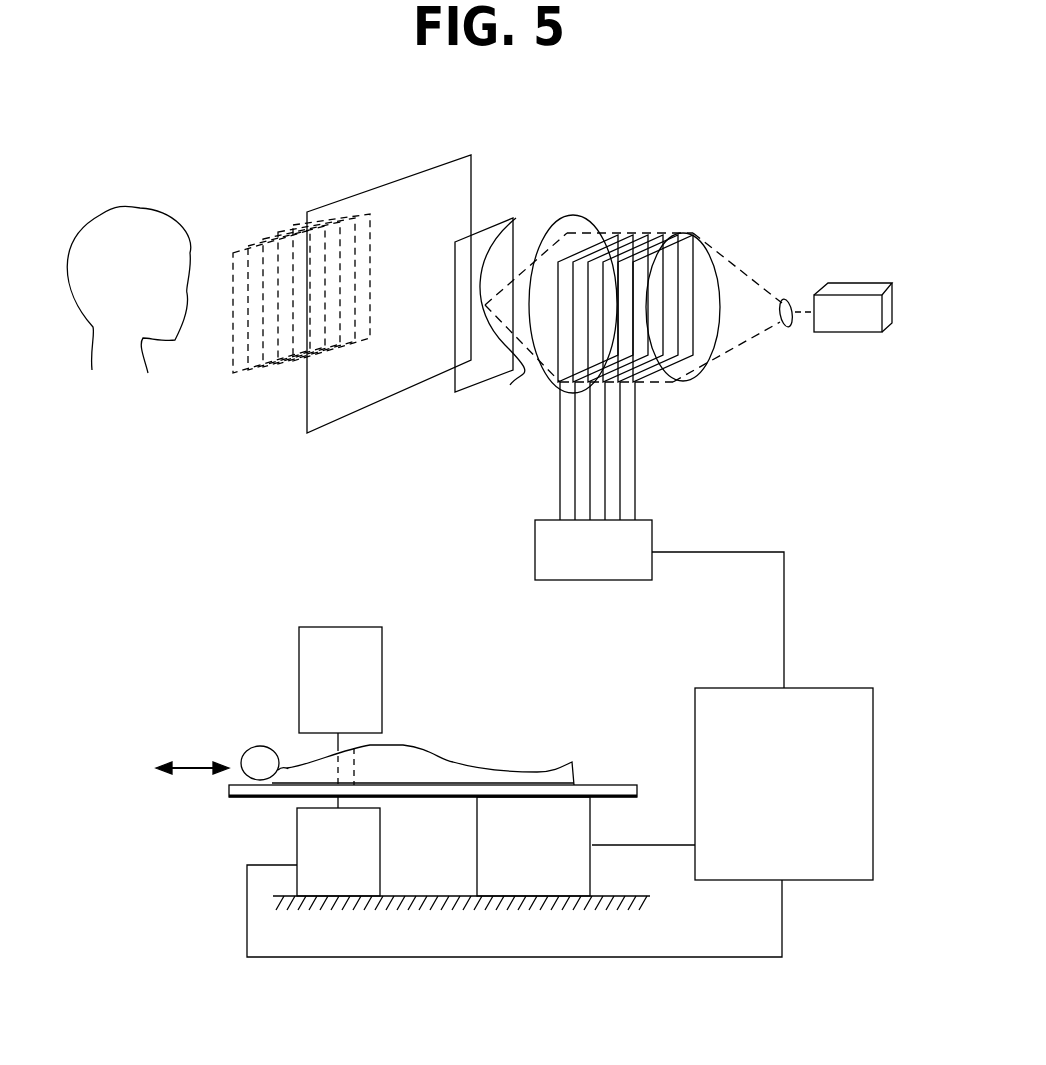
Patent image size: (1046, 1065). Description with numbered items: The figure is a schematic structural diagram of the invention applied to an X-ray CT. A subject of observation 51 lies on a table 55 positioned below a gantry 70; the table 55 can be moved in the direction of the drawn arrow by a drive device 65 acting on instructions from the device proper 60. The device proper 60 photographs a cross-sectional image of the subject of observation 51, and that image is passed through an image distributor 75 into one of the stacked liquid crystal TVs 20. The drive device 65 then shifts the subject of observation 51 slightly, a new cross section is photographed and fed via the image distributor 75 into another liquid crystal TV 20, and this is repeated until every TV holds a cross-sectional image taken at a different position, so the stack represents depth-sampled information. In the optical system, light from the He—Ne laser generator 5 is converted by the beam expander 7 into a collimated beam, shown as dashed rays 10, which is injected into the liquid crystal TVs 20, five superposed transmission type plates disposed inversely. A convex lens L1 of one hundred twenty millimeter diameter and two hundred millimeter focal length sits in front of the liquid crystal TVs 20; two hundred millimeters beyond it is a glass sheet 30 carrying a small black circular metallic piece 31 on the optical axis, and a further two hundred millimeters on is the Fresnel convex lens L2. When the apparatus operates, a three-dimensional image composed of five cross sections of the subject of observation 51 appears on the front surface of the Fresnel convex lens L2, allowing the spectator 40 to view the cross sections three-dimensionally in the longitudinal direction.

The spectator 40 is at (122, 368).
The Fresnel convex lens L2 is at (343, 403).
The glass sheet 30 is at (487, 373).
The black circular metallic piece 31 is at (517, 232).
The liquid crystal TV 20 is at (645, 228).
The convex lens L1 is at (549, 385).
The light rays 10 is at (738, 363).
The beam expander 7 is at (788, 298).
The He—Ne laser generator 5 is at (858, 328).
The image distributor 75 is at (600, 567).
The device proper 60 is at (858, 803).
The gantry 70 is at (368, 681).
The subject of observation 51 is at (425, 775).
The table 55 is at (602, 787).
The drive device 65 is at (533, 887).